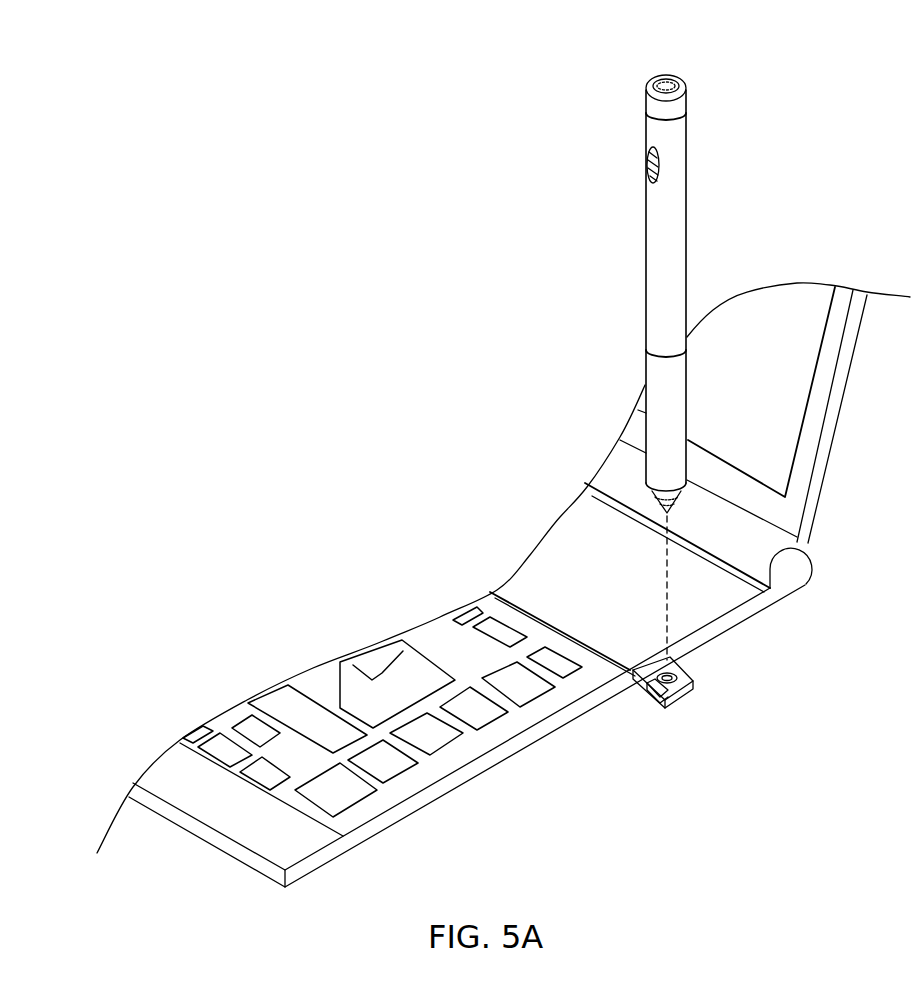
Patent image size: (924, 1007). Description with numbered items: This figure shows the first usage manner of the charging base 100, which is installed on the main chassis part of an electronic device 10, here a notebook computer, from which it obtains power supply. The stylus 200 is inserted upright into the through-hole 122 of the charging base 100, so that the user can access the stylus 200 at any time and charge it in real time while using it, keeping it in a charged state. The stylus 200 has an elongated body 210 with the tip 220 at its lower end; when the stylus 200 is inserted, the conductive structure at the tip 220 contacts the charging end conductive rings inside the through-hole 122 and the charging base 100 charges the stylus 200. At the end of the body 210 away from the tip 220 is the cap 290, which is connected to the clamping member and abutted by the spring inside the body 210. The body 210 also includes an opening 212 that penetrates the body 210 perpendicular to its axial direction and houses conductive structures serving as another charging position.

The electronic device 10 is at (734, 622).
The charging base 100 is at (689, 706).
The through-hole 122 is at (656, 660).
The stylus 200 is at (706, 202).
The body 210 is at (657, 279).
The opening 212 is at (640, 170).
The tip 220 is at (670, 508).
The cap 290 is at (664, 80).